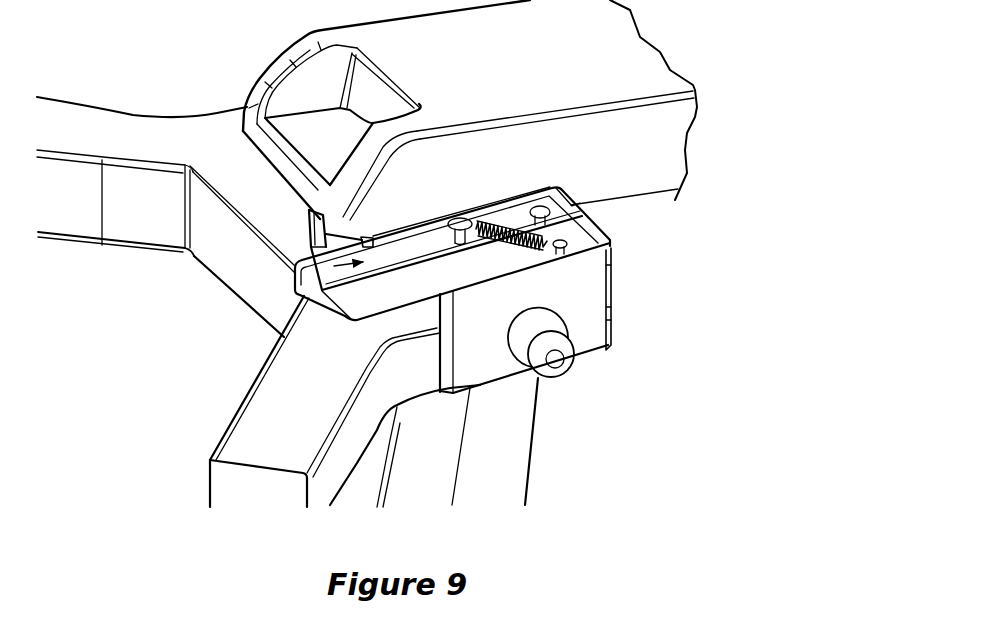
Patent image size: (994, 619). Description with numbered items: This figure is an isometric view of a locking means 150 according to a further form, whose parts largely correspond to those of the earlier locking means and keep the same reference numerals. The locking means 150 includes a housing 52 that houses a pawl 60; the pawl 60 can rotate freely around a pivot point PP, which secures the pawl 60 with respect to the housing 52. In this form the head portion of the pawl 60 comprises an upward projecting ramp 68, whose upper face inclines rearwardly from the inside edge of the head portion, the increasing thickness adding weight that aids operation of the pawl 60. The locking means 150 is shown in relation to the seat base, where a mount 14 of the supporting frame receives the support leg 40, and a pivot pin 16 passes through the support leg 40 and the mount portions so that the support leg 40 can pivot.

The housing 52 is at (97, 129).
The locking means 150 is at (702, 207).
The pivot point PP is at (575, 201).
The ramp 68 is at (309, 211).
The mount 14 is at (186, 309).
The pawl 60 is at (294, 292).
The pivot pin 16 is at (557, 363).
The support leg 40 is at (510, 450).